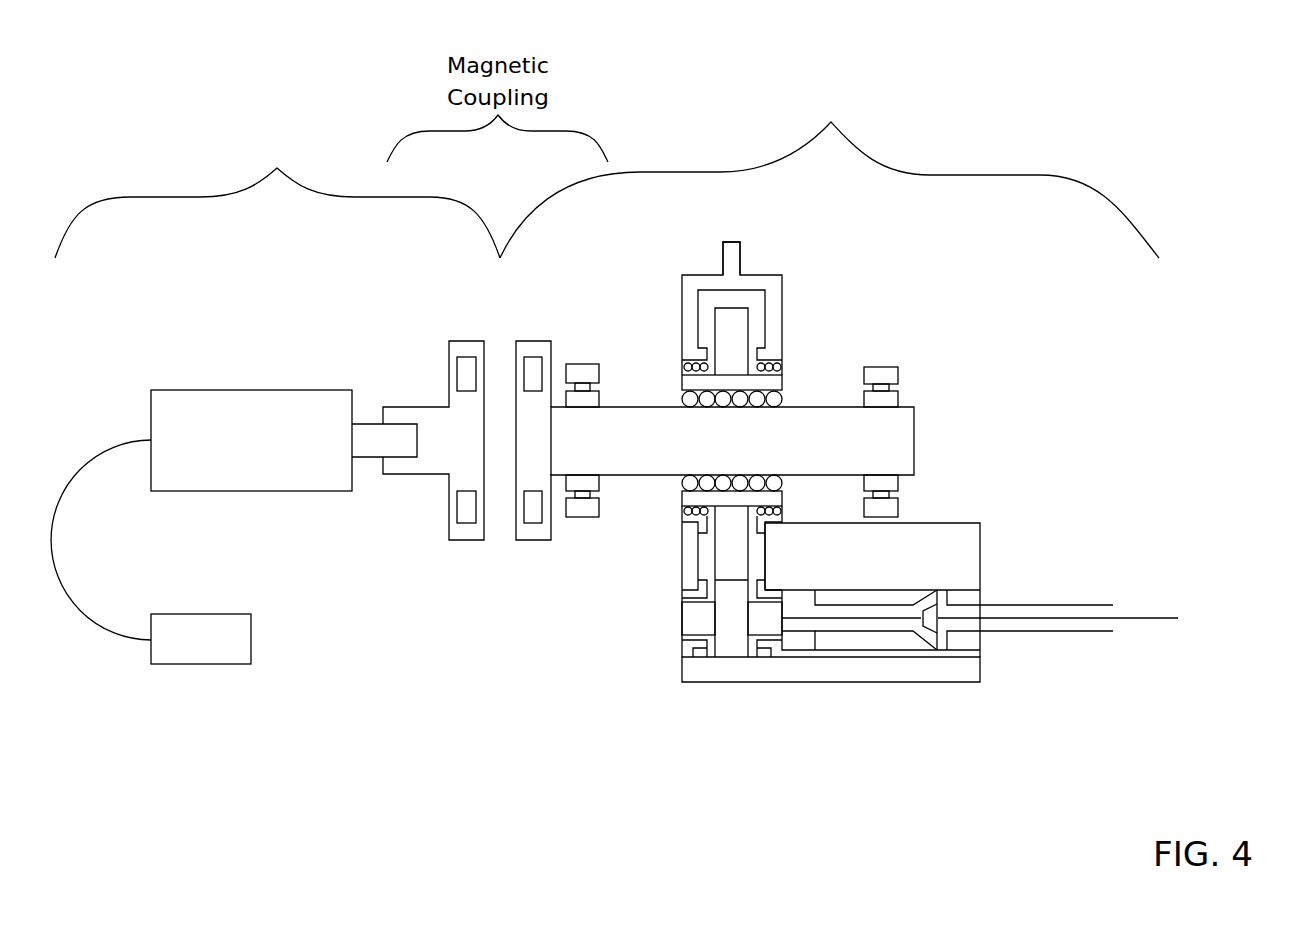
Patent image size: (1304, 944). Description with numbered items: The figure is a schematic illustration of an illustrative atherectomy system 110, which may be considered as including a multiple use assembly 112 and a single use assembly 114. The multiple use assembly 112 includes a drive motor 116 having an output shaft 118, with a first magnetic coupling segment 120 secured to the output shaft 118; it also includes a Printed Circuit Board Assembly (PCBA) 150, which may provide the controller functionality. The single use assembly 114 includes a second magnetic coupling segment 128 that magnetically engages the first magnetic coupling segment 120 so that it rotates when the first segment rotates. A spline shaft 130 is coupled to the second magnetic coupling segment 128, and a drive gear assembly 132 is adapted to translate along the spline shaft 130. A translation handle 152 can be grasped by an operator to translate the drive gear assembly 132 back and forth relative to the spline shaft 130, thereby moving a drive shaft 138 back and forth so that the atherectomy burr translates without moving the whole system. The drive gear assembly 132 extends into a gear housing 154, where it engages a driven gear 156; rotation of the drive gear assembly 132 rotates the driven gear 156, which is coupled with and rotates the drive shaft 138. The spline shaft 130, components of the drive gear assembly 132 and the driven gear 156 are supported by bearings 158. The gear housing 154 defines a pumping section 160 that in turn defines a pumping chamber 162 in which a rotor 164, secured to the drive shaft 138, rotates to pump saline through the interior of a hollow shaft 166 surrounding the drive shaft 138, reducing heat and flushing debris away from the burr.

The atherectomy system 110 is at (1118, 157).
The multiple use assembly 112 is at (277, 201).
The single use assembly 114 is at (829, 178).
The drive motor 116 is at (211, 396).
The output shaft 118 is at (372, 427).
The first magnetic coupling segment 120 is at (464, 514).
The second magnetic coupling segment 128 is at (531, 522).
The spline shaft 130 is at (645, 408).
The drive gear assembly 132 is at (812, 343).
The drive shaft 138 is at (1146, 617).
The Printed Circuit Board Assembly (PCBA) 150 is at (201, 614).
The translation handle 152 is at (741, 257).
The gear housing 154 is at (793, 672).
The driven gear 156 is at (700, 625).
The bearings 158 is at (588, 500).
The pumping section 160 is at (860, 700).
The pumping chamber 162 is at (938, 642).
The rotor 164 is at (940, 590).
The hollow shaft 166 is at (1063, 604).